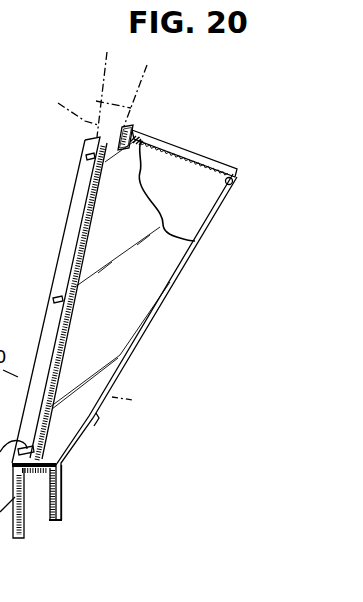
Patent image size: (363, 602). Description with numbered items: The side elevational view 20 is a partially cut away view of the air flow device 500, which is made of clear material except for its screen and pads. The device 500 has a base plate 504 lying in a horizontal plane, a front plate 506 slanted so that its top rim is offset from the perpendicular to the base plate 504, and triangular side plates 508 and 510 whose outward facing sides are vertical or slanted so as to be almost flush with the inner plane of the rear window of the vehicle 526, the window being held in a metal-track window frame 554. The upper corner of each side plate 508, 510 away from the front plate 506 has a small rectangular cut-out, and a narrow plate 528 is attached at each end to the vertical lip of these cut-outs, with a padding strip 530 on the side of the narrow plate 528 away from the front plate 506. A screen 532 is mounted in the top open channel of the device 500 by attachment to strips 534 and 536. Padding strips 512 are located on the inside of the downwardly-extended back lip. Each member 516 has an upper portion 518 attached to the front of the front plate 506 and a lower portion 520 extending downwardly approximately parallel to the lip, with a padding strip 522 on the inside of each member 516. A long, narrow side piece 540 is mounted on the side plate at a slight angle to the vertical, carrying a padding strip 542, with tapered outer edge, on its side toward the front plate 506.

The side elevational view 20 is at (138, 414).
The air flow device 500 is at (158, 324).
The base plate 504 is at (47, 472).
The front plate 506 is at (206, 226).
The side plate 508 is at (165, 140).
The side plate 510 is at (212, 350).
The padding strips 512 is at (22, 534).
The member 516 is at (70, 477).
The upper portion 518 is at (94, 428).
The lower portion 520 is at (65, 517).
The padding strip 522 is at (64, 496).
The vehicle 526 is at (99, 80).
The narrow plate 528 is at (128, 125).
The padding strip 530 is at (119, 135).
The screen 532 is at (203, 162).
The strip 534 is at (139, 128).
The strip 536 is at (232, 185).
The side piece 540 is at (65, 282).
The padding strip 542 is at (77, 267).
The window frame 554 is at (62, 108).